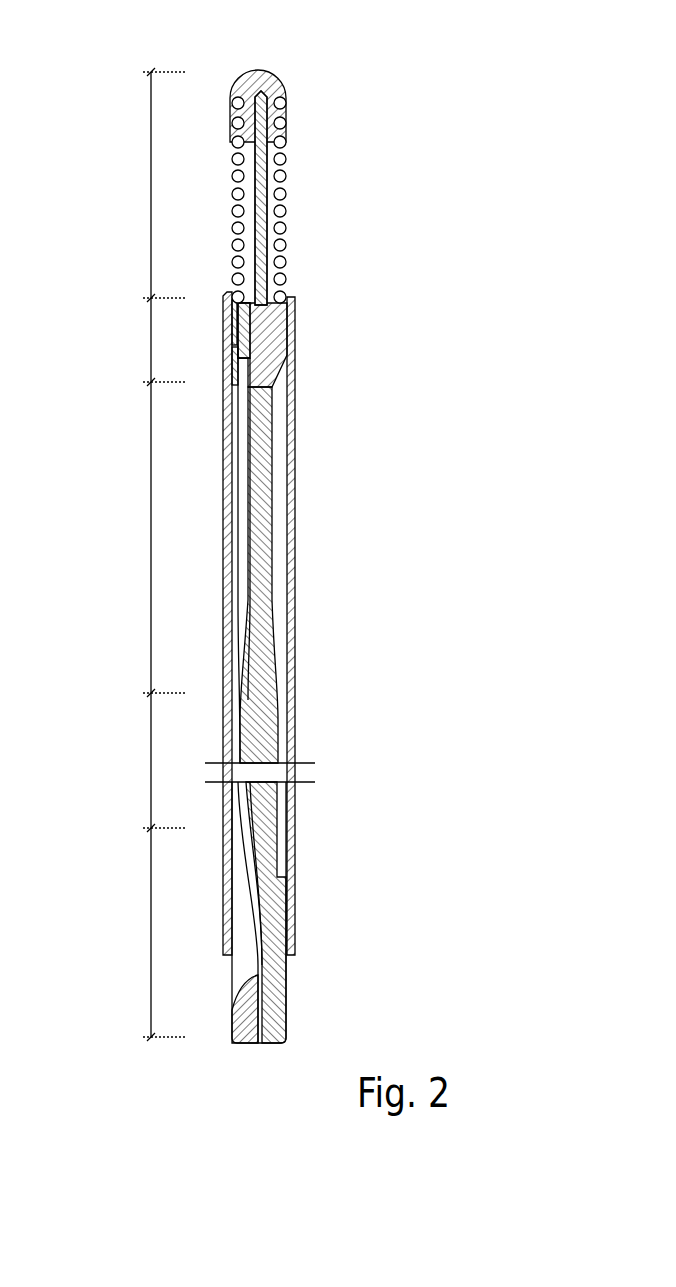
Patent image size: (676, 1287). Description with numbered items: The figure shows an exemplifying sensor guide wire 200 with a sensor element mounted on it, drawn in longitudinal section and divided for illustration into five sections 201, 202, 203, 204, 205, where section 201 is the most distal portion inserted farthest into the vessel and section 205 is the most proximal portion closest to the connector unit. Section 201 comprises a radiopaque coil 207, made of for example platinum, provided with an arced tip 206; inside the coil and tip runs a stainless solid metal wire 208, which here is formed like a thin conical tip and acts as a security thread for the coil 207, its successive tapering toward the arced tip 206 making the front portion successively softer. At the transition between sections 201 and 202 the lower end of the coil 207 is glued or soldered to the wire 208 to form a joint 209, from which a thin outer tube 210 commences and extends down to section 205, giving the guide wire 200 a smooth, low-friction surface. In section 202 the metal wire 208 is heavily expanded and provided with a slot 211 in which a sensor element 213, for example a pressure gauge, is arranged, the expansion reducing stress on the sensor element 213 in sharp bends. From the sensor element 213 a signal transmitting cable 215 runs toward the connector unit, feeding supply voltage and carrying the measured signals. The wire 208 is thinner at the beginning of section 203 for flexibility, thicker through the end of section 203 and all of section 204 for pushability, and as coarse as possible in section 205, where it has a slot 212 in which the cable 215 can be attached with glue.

The sensor guide wire 200 is at (312, 535).
The section 201 is at (141, 183).
The section 202 is at (141, 338).
The section 203 is at (141, 535).
The section 204 is at (141, 758).
The section 205 is at (141, 932).
The arced tip 206 is at (248, 88).
The radiopaque coil 207 is at (283, 192).
The metal wire 208 is at (263, 223).
The joint 209 is at (240, 283).
The outer tube 210 is at (295, 465).
The slot 211 is at (268, 310).
The slot 212 is at (242, 968).
The sensor element 213 is at (233, 345).
The signal transmitting cable 215 is at (240, 493).